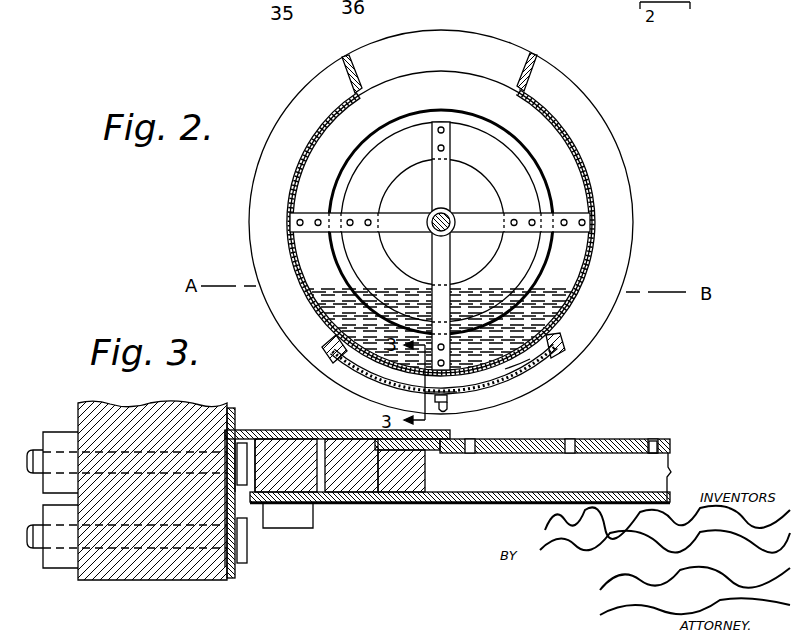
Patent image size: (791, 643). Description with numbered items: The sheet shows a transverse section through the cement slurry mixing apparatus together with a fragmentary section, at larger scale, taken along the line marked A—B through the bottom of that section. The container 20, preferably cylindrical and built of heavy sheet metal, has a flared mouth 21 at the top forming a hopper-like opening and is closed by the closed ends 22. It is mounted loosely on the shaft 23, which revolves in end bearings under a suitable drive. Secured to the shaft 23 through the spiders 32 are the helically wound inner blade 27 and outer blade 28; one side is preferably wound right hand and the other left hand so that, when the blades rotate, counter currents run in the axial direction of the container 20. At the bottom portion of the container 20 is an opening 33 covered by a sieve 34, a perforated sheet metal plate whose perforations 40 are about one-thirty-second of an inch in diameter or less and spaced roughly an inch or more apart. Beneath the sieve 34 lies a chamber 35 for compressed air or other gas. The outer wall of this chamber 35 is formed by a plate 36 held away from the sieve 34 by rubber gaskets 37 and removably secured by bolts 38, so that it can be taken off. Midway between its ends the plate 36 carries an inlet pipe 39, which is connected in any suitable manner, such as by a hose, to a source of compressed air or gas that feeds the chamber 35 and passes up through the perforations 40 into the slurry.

In FIG. 2, the container 20 is at (588, 163).
In FIG. 2, the flared mouth 21 is at (527, 60).
In FIG. 2, the closed ends 22 is at (628, 208).
In FIG. 3, the closed ends 22 is at (185, 572).
In FIG. 2, the shaft 23 is at (450, 233).
In FIG. 2, the inner blade 27 is at (402, 160).
In FIG. 2, the outer blade 28 is at (570, 262).
In FIG. 2, the spiders 32 is at (522, 217).
In FIG. 2, the opening 33 is at (449, 411).
In FIG. 2, the sieve 34 is at (517, 373).
In FIG. 3, the sieve 34 is at (623, 443).
In FIG. 2, the chamber 35 is at (368, 373).
In FIG. 3, the chamber 35 is at (475, 482).
In FIG. 2, the plate 36 is at (343, 367).
In FIG. 3, the plate 36 is at (555, 490).
In FIG. 3, the rubber gaskets 37 is at (380, 497).
In FIG. 2, the bolts 38 is at (562, 352).
In FIG. 3, the bolts 38 is at (297, 520).
In FIG. 2, the inlet pipe 39 is at (447, 408).
In FIG. 3, the perforations 40 is at (657, 438).